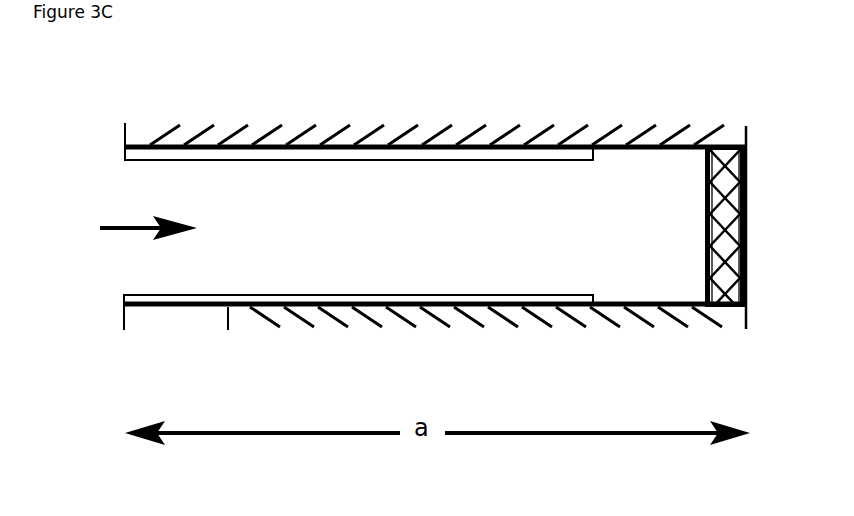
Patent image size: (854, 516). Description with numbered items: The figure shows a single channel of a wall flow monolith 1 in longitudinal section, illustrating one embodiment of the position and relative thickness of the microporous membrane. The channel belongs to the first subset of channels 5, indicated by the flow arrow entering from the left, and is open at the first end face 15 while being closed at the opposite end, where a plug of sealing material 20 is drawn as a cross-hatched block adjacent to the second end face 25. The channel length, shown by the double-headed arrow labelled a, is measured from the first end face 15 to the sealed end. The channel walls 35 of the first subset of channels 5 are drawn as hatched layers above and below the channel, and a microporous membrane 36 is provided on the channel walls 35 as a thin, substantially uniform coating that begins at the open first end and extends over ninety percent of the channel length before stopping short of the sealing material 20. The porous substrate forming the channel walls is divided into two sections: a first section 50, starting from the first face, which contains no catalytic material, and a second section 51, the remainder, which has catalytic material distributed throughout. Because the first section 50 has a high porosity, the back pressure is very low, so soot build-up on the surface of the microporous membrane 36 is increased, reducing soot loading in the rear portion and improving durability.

The wall flow monolith 1 is at (445, 96).
The first subset of channels 5 is at (131, 229).
The first end face 15 is at (124, 133).
The sealing material 20 is at (756, 229).
The second end face 25 is at (747, 133).
The channel walls 35 is at (492, 140).
The microporous membrane 36 is at (340, 155).
The first section 50 is at (186, 318).
The second section 51 is at (318, 308).